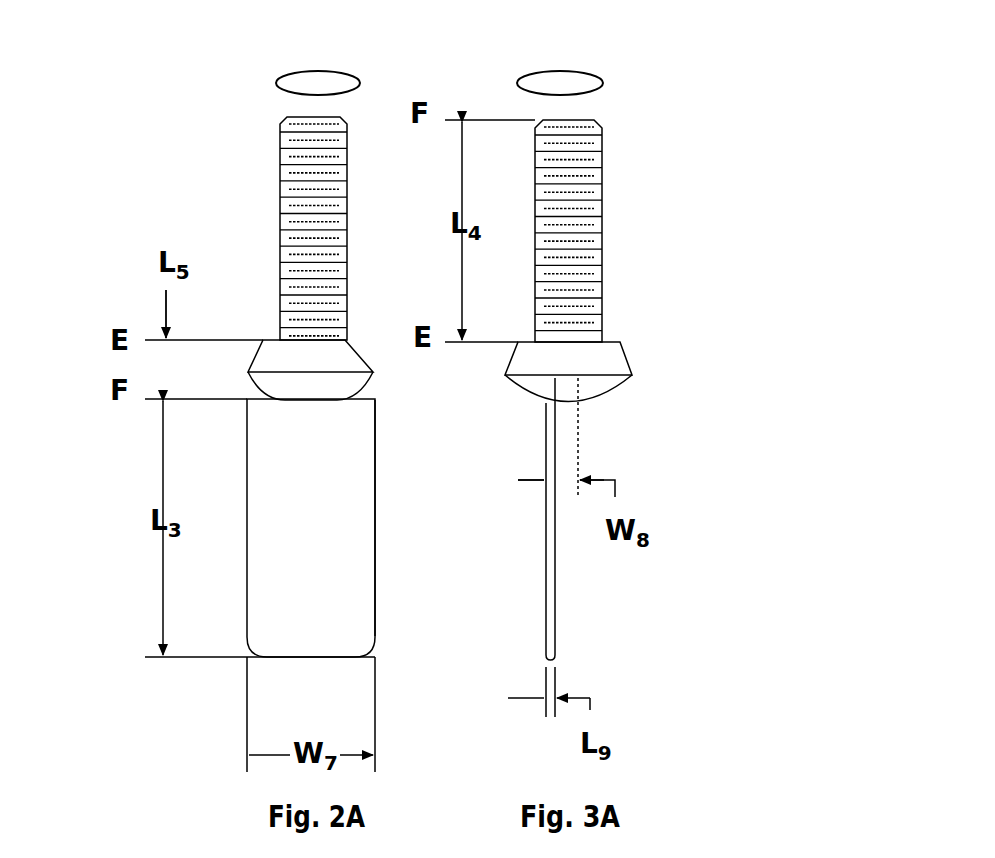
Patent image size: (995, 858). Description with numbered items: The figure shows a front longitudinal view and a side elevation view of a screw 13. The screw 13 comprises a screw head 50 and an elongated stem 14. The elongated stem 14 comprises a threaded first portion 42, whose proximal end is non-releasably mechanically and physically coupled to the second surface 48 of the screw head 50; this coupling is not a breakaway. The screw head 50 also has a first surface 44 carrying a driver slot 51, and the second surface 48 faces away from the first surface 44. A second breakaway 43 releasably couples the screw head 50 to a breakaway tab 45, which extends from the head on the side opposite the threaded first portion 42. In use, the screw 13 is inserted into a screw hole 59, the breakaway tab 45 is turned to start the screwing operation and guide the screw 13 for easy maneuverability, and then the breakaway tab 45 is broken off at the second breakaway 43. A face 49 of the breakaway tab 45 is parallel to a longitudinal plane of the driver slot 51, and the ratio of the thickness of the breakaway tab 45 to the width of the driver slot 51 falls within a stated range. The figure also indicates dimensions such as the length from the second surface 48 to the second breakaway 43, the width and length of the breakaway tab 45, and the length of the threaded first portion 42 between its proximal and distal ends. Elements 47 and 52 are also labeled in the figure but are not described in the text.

In FIG. 2A, the screw 13 is at (104, 239).
In FIG. 3A, the screw 13 is at (734, 141).
In FIG. 2A, the elongated stem 14 is at (249, 262).
In FIG. 3A, the elongated stem 14 is at (664, 251).
In FIG. 2A, the threaded first portion 42 is at (287, 215).
In FIG. 3A, the threaded first portion 42 is at (580, 220).
In FIG. 2A, the second breakaway 43 is at (345, 397).
In FIG. 3A, the first surface 44 is at (605, 397).
In FIG. 2A, the breakaway tab 45 is at (546, 542).
In FIG. 3A, the upper head portion 47 is at (610, 338).
In FIG. 2A, the second surface 48 is at (263, 339).
In FIG. 2A, the face 49 is at (311, 528).
In FIG. 3A, the face 49 is at (580, 628).
In FIG. 2A, the screw head 50 is at (378, 334).
In FIG. 3A, the screw head 50 is at (667, 374).
In FIG. 3A, the driver slot 51 is at (603, 424).
In FIG. 3A, the top surface 52 is at (580, 117).
In FIG. 2A, the screw hole 59 is at (310, 82).